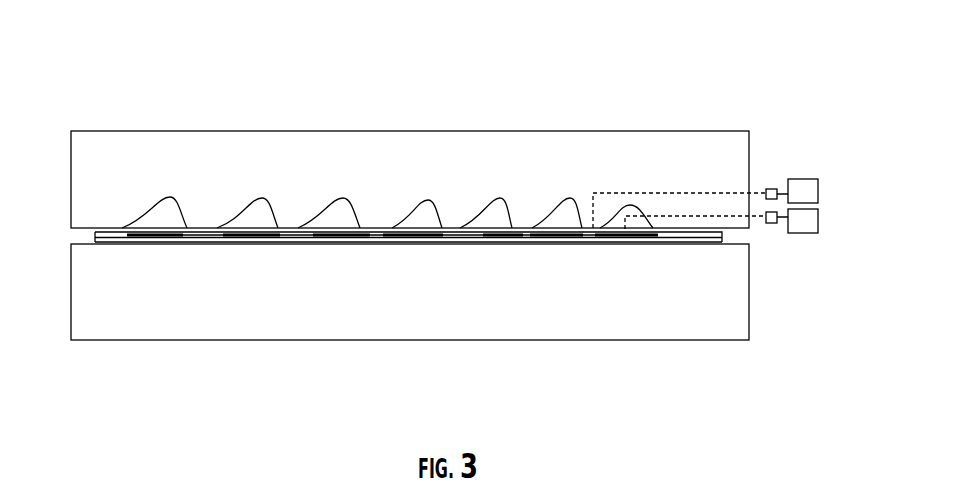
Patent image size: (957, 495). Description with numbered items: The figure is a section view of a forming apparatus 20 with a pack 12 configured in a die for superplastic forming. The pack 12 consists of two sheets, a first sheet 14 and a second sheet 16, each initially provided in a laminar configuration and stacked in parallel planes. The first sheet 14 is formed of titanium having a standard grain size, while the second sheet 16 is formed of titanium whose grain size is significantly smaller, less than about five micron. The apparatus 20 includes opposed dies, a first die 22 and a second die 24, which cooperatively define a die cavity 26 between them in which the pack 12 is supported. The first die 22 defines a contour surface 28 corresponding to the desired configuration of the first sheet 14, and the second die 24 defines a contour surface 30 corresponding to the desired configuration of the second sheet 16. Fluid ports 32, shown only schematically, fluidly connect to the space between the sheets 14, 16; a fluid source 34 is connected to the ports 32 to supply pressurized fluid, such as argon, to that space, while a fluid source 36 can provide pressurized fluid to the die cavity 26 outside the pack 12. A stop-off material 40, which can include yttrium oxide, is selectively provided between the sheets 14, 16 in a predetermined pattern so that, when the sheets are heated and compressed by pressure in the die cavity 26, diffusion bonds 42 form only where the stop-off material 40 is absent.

The forming apparatus 20 is at (465, 89).
The second die 24 is at (525, 157).
The first die 22 is at (462, 328).
The first sheet 14 is at (252, 243).
The second sheet 16 is at (290, 238).
The contour surface 28 is at (185, 247).
The stop-off material 40 is at (357, 238).
The diffusion bonds 42 is at (288, 240).
The contour surface 30 is at (170, 197).
The pack 12 is at (258, 222).
The die cavity 26 is at (428, 222).
The fluid ports 32 is at (768, 189).
The fluid source 36 is at (803, 191).
The fluid source 34 is at (803, 221).